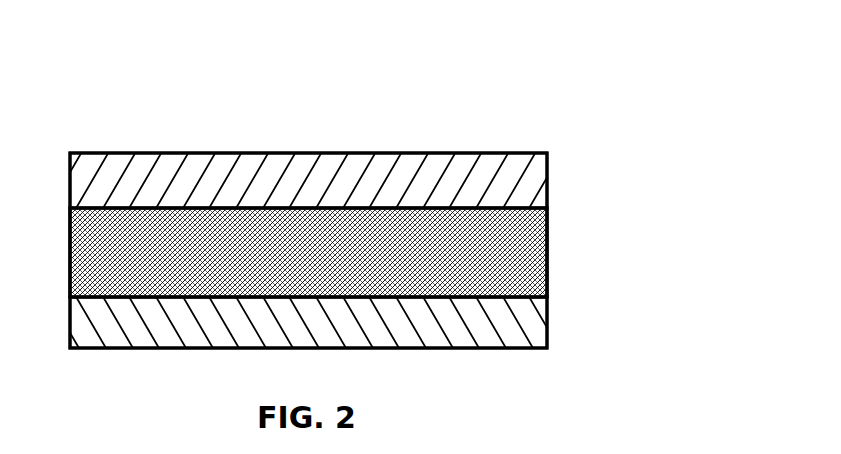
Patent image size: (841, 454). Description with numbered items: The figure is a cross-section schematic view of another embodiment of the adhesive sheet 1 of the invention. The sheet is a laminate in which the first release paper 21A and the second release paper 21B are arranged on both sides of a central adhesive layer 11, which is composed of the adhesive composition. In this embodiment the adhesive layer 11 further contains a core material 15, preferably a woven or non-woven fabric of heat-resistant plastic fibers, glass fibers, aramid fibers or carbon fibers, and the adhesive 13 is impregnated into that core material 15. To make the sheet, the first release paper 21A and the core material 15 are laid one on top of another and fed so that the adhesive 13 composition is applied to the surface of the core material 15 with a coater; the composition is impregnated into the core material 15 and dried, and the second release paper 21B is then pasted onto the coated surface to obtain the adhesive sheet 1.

The adhesive sheet 1 is at (441, 127).
The adhesive layer 11 is at (656, 208).
The adhesive 13 is at (548, 233).
The core material 15 is at (548, 280).
The first release paper 21A is at (548, 170).
The second release paper 21B is at (548, 325).